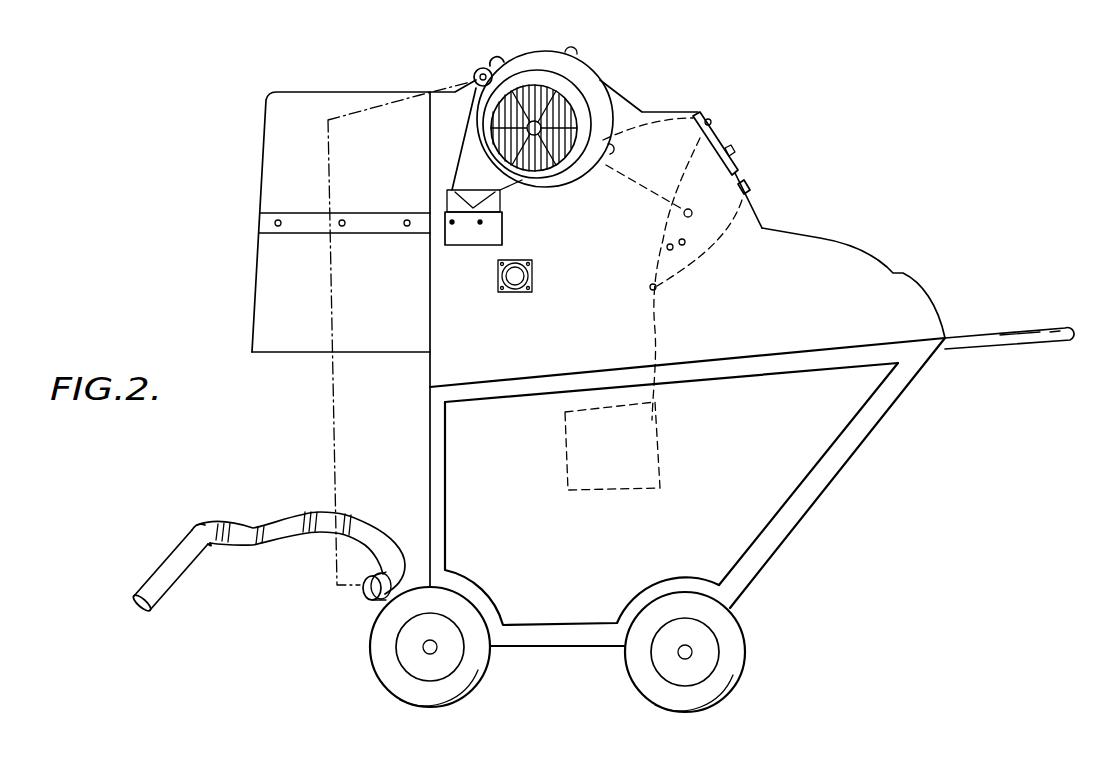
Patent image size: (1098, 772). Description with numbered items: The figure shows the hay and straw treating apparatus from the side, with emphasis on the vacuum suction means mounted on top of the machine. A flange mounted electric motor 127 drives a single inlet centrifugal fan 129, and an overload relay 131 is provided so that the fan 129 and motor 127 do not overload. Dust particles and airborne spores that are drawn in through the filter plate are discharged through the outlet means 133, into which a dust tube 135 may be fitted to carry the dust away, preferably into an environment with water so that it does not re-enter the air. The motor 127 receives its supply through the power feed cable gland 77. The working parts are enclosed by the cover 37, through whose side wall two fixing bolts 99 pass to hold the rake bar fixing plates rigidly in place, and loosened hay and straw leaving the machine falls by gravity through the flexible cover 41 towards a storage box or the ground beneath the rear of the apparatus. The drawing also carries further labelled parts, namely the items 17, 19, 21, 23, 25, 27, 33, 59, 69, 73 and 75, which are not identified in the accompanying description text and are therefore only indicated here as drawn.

The vacuum apparatus 17 is at (756, 496).
The wheels 19 is at (372, 665).
The frame 21 is at (428, 467).
The upper frame rail 23 is at (840, 392).
The diagonal frame strut 25 is at (795, 528).
The hose coupling 27 is at (428, 515).
The handle 33 is at (992, 338).
The cover 37 is at (907, 298).
The flexible cover 41 is at (251, 282).
The hose connector 59 is at (515, 293).
The collection bag 69 is at (624, 465).
The pivot 73 is at (692, 211).
The lid 75 is at (712, 118).
The power feed cable gland 77 is at (750, 192).
The fixing bolts 99 is at (672, 250).
The motor 127 is at (587, 81).
The centrifugal fan 129 is at (548, 190).
The overload relay 131 is at (518, 67).
The outlet means 133 is at (474, 77).
The dust tube 135 is at (255, 530).